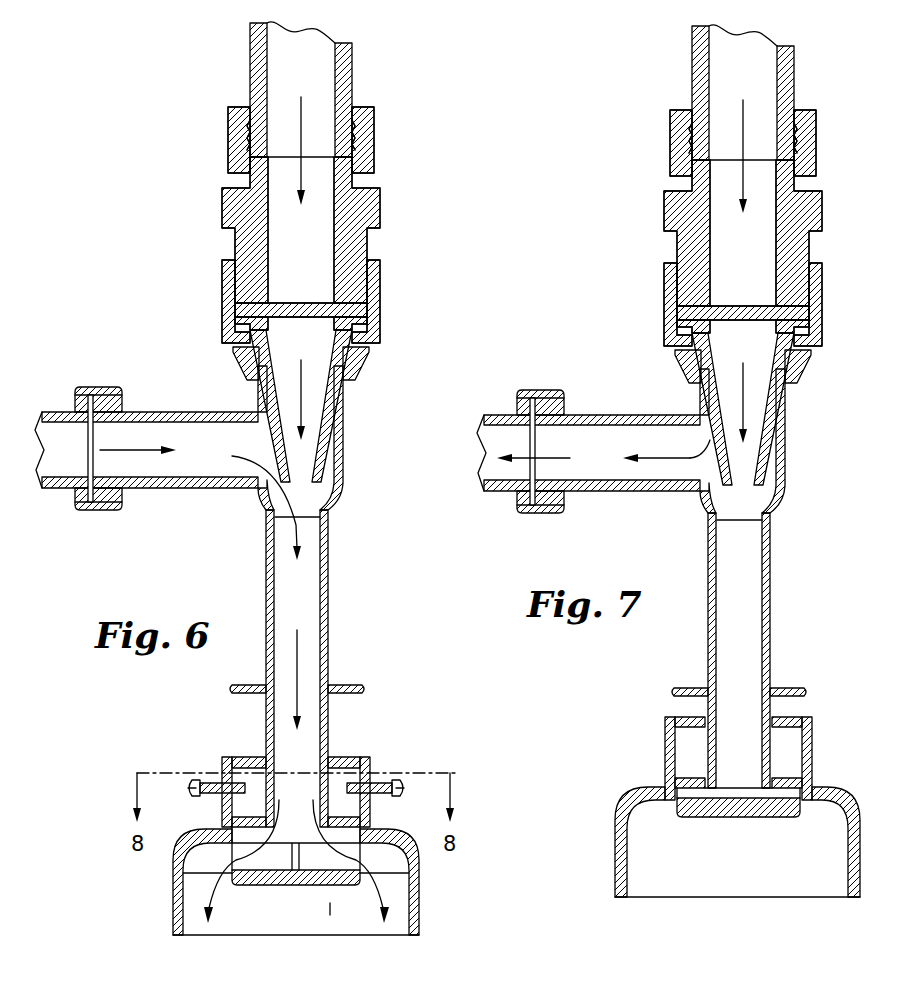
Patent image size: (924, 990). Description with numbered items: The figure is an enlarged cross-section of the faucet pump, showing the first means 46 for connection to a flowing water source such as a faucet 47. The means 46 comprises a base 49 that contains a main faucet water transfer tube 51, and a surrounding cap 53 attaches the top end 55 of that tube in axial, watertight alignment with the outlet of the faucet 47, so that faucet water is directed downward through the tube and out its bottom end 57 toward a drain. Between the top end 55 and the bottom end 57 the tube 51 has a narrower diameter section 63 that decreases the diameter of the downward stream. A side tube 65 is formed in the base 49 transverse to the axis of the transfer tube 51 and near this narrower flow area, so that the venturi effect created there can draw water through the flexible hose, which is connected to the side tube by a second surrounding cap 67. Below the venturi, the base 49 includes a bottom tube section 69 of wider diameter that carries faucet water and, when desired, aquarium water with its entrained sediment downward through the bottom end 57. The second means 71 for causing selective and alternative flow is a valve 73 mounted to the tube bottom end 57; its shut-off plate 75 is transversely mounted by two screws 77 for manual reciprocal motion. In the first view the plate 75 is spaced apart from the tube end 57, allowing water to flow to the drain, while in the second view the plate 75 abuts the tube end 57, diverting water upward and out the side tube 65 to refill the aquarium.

In FIG. 6, the first means for connection to a flowing water source 46 is at (225, 248).
In FIG. 7, the first means for connection to a flowing water source 46 is at (708, 228).
In FIG. 6, the faucet 47 is at (357, 78).
In FIG. 7, the faucet 47 is at (782, 92).
In FIG. 6, the base 49 is at (358, 353).
In FIG. 7, the base 49 is at (774, 373).
In FIG. 6, the main faucet water transfer tube 51 is at (227, 165).
In FIG. 7, the main faucet water transfer tube 51 is at (708, 144).
In FIG. 6, the surrounding cap 53 is at (223, 330).
In FIG. 7, the surrounding cap 53 is at (772, 295).
In FIG. 6, the top end of tube 55 is at (350, 213).
In FIG. 7, the top end of tube 55 is at (772, 246).
In FIG. 6, the bottom end of tube 57 is at (300, 787).
In FIG. 7, the bottom end of tube 57 is at (728, 780).
In FIG. 6, the narrower diameter section 63 is at (303, 456).
In FIG. 7, the narrower diameter section 63 is at (782, 409).
In FIG. 6, the side tube 65 is at (213, 437).
In FIG. 7, the side tube 65 is at (588, 425).
In FIG. 6, the surrounding cap 67 is at (97, 507).
In FIG. 7, the surrounding cap 67 is at (570, 470).
In FIG. 6, the bottom tube section 69 is at (307, 718).
In FIG. 7, the bottom tube section 69 is at (762, 650).
In FIG. 6, the second means for causing selective and alternative flow 71 is at (330, 895).
In FIG. 7, the second means for causing selective and alternative flow 71 is at (770, 843).
In FIG. 6, the valve 73 is at (230, 757).
In FIG. 6, the shut-off plate 75 is at (270, 883).
In FIG. 7, the shut-off plate 75 is at (747, 817).
In FIG. 6, the screws 77 is at (188, 786).